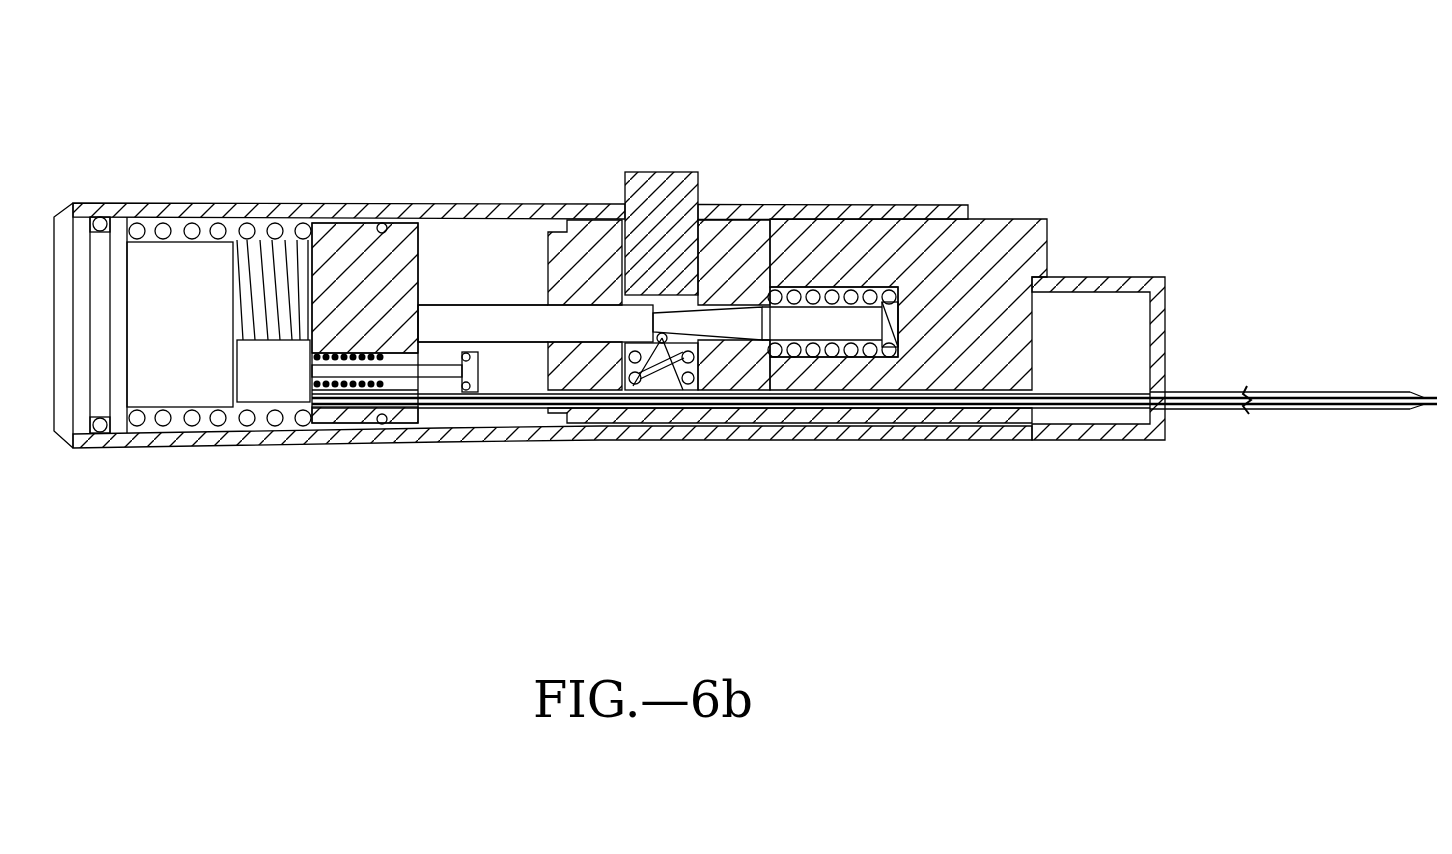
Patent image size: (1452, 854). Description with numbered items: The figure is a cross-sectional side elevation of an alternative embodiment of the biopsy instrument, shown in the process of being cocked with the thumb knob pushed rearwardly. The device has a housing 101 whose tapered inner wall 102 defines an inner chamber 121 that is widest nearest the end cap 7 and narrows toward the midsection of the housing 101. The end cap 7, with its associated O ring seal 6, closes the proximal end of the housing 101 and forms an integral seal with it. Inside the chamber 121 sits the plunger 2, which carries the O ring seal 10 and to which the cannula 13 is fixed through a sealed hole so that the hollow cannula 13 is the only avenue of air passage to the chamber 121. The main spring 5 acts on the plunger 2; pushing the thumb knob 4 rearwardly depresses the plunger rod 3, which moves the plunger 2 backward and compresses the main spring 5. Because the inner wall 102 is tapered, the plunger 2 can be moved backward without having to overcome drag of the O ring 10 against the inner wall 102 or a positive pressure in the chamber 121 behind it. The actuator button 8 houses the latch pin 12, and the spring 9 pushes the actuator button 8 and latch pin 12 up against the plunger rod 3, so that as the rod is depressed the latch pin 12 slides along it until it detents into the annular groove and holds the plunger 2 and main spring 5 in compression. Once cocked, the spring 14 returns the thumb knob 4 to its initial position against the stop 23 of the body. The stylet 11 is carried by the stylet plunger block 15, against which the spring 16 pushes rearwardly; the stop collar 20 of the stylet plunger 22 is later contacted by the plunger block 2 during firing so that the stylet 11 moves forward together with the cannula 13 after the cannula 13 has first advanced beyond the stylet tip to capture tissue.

The plunger block 2 is at (348, 240).
The plunger rod 3 is at (817, 320).
The thumb knob 4 is at (1013, 250).
The main spring 5 is at (252, 228).
The O ring seal 6 is at (100, 222).
The end cap 7 is at (177, 280).
The actuator button 8 is at (662, 197).
The spring 9 is at (635, 380).
The O ring seal 10 is at (383, 223).
The stylet 11 is at (445, 408).
The latch pin 12 is at (665, 342).
The cannula 13 is at (1333, 400).
The spring 14 is at (870, 297).
The stylet plunger block 15 is at (264, 383).
The spring 16 is at (337, 387).
The stop collar 20 is at (482, 390).
The plunger 22 is at (398, 373).
The stop 23 is at (1160, 328).
The housing 101 is at (1013, 440).
The tapered inner wall 102 is at (463, 224).
The inner chamber 121 is at (502, 270).